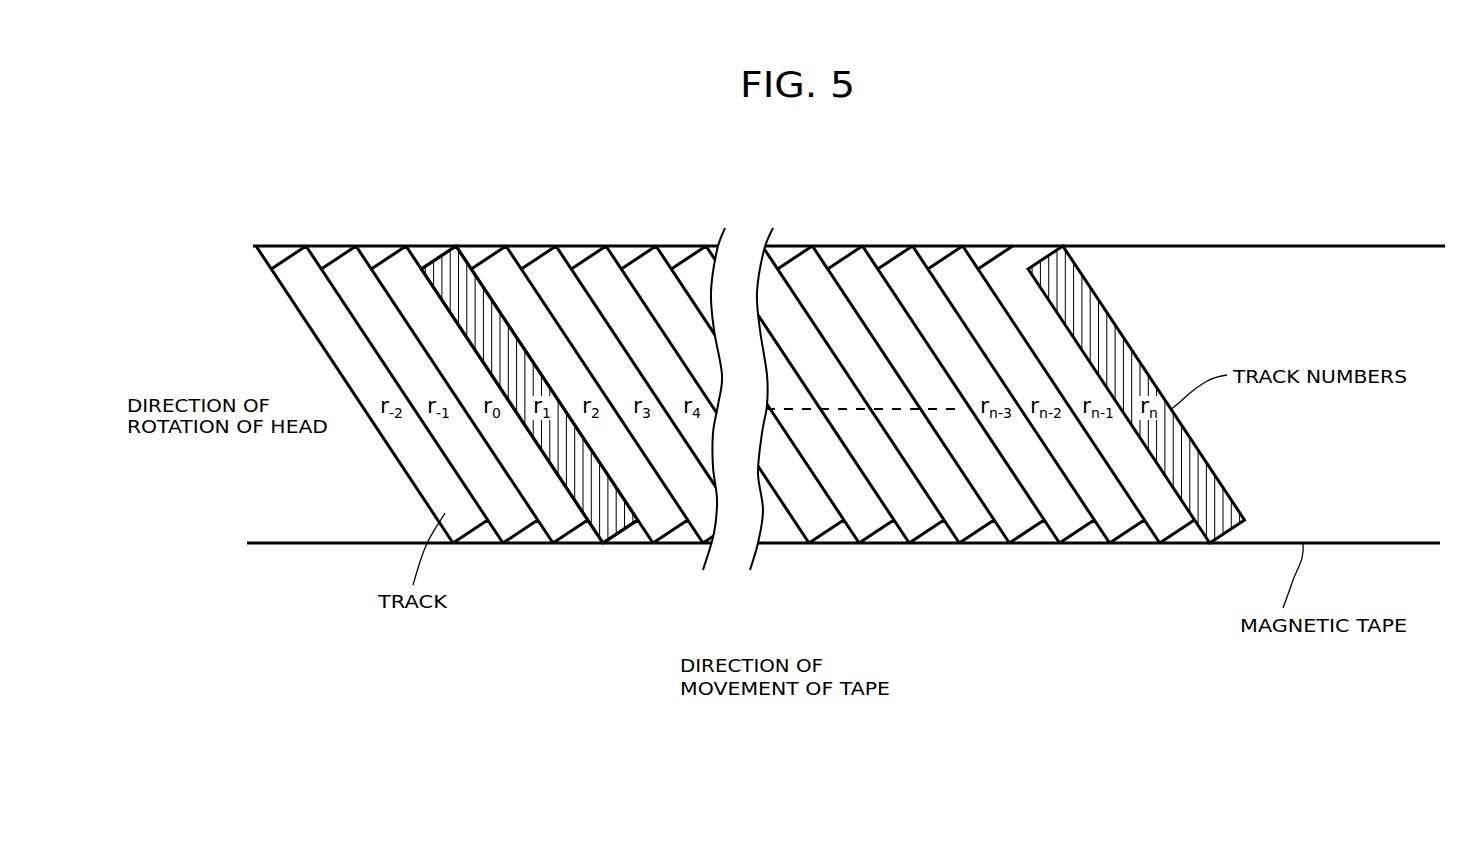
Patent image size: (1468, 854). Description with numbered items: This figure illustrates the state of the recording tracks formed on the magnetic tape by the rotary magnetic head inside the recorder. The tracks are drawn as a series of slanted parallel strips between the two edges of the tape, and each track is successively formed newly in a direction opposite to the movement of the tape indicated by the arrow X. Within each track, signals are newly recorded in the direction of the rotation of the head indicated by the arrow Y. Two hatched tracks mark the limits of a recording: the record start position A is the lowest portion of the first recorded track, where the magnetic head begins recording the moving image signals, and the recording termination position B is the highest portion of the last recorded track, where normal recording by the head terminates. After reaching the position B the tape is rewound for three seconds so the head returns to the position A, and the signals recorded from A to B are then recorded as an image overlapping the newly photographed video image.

The record start position A is at (627, 528).
The recording termination position B is at (1038, 278).
The arrow indicating direction of movement of the tape X is at (892, 638).
The arrow indicating direction of rotation of the head Y is at (378, 480).